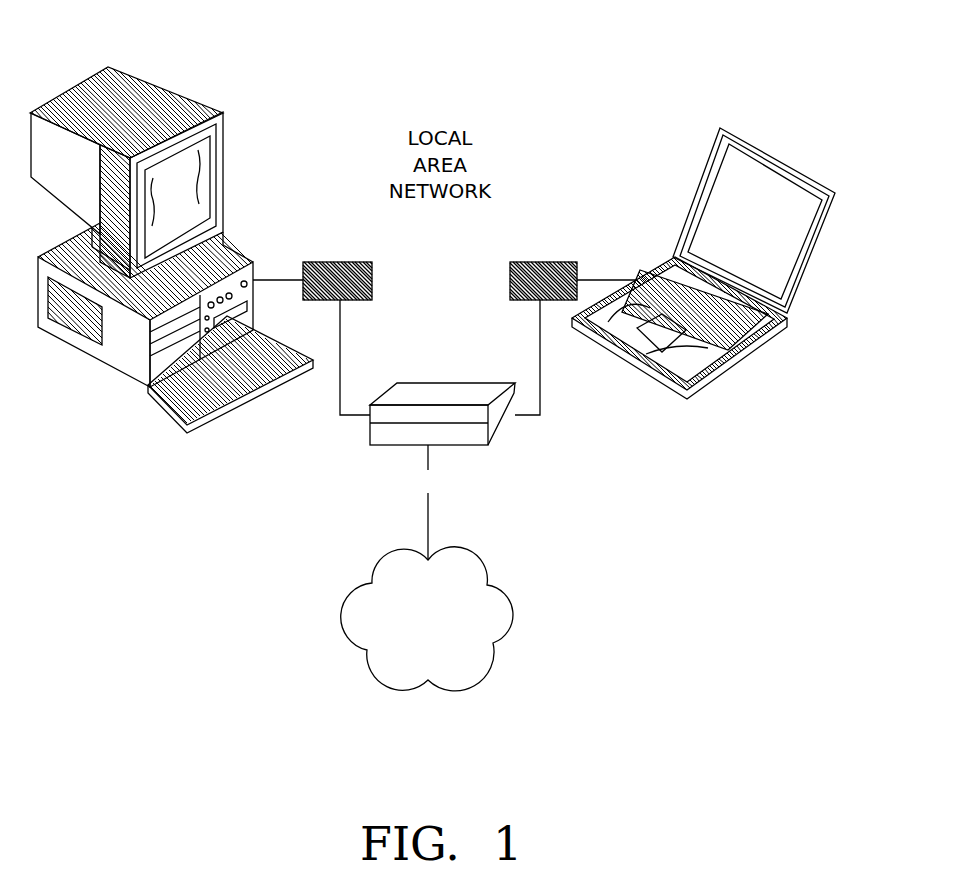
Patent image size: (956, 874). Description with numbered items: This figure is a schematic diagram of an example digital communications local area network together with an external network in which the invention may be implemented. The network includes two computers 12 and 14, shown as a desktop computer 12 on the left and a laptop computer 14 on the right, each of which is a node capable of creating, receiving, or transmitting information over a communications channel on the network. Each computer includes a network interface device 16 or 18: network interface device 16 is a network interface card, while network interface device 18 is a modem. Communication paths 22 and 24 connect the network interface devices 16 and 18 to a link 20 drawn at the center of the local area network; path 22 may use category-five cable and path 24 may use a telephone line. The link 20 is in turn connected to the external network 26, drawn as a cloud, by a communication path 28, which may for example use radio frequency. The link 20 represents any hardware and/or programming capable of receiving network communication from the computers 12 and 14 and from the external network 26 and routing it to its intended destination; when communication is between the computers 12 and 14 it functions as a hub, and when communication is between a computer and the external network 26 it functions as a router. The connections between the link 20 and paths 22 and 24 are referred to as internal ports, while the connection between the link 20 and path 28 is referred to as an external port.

The computer 12 is at (202, 100).
The computer 14 is at (720, 157).
The network interface device 16 is at (355, 262).
The network interface device 18 is at (525, 262).
The link 20 is at (397, 442).
The communication path 22 is at (340, 385).
The communication path 24 is at (543, 405).
The external network 26 is at (387, 567).
The communication path 28 is at (425, 520).